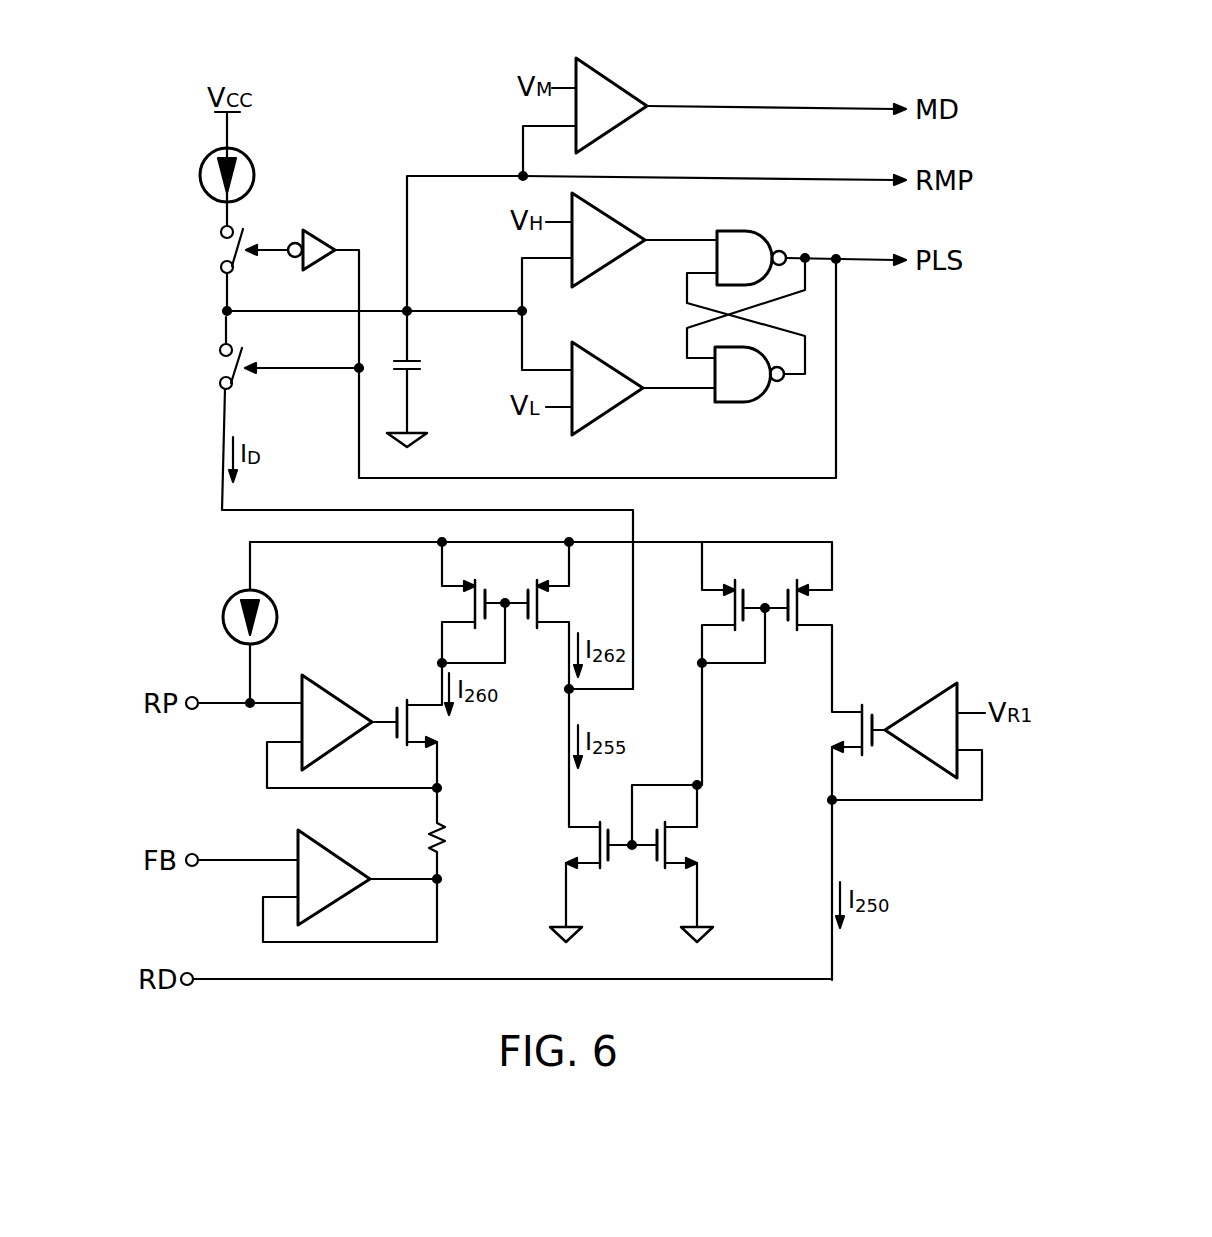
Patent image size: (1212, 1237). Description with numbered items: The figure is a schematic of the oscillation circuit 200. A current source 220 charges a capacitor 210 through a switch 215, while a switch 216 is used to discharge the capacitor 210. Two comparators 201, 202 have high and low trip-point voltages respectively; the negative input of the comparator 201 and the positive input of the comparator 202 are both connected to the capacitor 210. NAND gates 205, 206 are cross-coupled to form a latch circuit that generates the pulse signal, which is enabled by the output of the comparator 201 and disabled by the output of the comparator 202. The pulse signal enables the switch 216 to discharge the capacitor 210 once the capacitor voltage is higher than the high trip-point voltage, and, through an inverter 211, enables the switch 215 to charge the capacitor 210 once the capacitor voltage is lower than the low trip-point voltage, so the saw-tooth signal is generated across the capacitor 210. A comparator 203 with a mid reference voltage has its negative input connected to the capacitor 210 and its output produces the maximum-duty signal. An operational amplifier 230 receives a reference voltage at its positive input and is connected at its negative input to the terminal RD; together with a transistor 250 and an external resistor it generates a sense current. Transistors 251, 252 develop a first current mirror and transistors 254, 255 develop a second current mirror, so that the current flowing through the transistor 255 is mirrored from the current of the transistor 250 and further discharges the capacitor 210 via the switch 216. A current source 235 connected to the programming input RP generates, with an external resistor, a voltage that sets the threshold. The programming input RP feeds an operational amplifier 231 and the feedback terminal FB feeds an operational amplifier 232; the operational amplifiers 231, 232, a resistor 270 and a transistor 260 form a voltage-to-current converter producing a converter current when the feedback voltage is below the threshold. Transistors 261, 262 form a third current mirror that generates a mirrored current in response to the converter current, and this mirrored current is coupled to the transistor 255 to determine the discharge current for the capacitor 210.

The oscillation circuit 200 is at (927, 32).
The comparator 201 is at (610, 278).
The comparator 202 is at (608, 423).
The comparator 203 is at (612, 78).
The NAND gate 205 is at (740, 232).
The NAND gate 206 is at (737, 410).
The capacitor 210 is at (420, 369).
The inverter 211 is at (322, 232).
The switch 215 is at (215, 251).
The switch 216 is at (215, 369).
The current source 220 is at (196, 178).
The operational amplifier 230 is at (918, 700).
The operational amplifier 231 is at (340, 698).
The operational amplifier 232 is at (338, 848).
The current source 235 is at (218, 618).
The transistor 250 is at (835, 728).
The transistor 251 is at (828, 610).
The transistor 252 is at (700, 608).
The transistor 254 is at (698, 847).
The transistor 255 is at (568, 845).
The transistor 260 is at (435, 725).
The transistor 261 is at (442, 606).
The transistor 262 is at (528, 633).
The resistor 270 is at (450, 845).